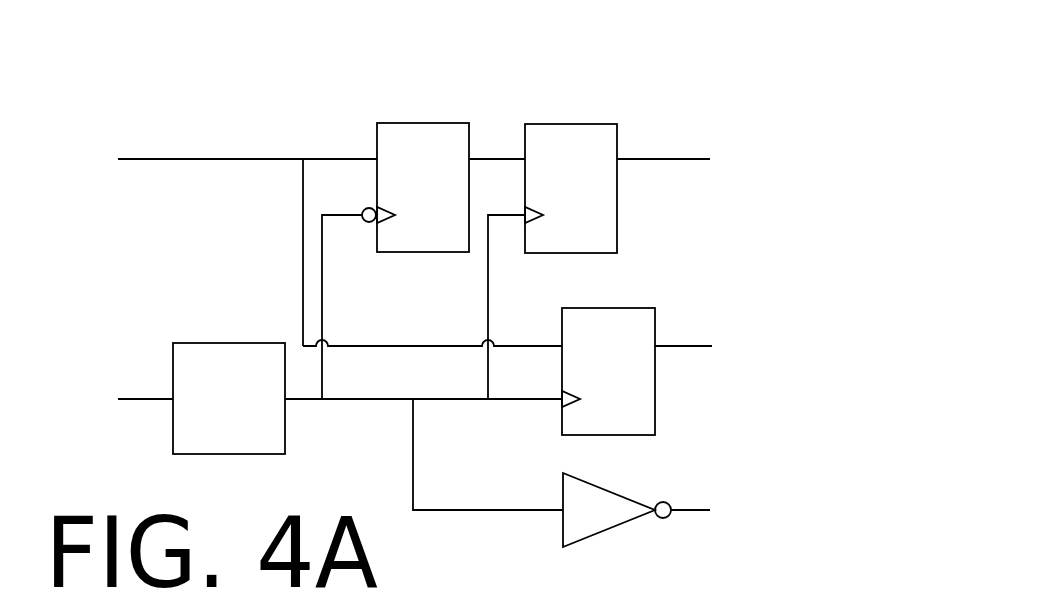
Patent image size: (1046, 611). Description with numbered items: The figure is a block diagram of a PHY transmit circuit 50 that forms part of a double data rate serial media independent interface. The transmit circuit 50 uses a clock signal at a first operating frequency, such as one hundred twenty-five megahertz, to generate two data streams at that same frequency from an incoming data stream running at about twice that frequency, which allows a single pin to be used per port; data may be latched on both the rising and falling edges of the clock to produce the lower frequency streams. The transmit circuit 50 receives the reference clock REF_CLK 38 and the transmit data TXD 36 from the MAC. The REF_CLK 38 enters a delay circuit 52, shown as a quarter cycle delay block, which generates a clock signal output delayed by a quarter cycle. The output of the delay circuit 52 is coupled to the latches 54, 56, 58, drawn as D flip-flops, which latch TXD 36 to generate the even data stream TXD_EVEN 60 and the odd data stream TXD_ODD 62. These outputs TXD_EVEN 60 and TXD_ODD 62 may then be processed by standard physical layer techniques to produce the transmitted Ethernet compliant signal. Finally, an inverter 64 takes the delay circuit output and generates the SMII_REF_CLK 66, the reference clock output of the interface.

The transmit data TXD 36 is at (82, 104).
The REF_CLK 38 is at (73, 322).
The PHY transmit circuit 50 is at (336, 52).
The delay circuit 52 is at (228, 343).
The latch 54 is at (395, 123).
The latch 56 is at (542, 124).
The latch 58 is at (607, 308).
The TXD_EVEN 60 is at (733, 90).
The TXD_ODD 62 is at (738, 290).
The inverter 64 is at (738, 438).
The SMII_REF_CLK 66 is at (588, 537).